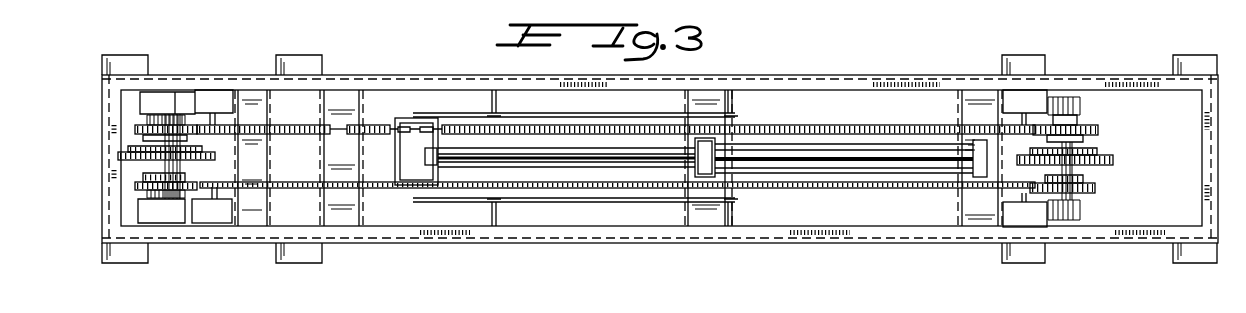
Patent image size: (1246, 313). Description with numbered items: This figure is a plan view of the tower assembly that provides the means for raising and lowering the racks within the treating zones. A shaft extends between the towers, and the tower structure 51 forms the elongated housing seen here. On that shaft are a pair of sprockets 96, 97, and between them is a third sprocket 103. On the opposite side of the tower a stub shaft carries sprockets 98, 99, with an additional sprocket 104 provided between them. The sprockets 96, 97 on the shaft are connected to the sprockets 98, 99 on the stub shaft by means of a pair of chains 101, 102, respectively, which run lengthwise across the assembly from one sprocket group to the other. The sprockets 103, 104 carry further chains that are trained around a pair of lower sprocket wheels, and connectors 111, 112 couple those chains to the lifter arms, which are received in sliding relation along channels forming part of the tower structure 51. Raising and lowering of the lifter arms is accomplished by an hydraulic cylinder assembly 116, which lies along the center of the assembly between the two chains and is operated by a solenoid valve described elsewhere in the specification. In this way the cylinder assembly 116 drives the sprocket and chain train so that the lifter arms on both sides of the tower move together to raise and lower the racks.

The tower 51 is at (510, 243).
The sprocket 96 is at (139, 181).
The sprocket 97 is at (135, 128).
The sprocket 98 is at (1097, 189).
The sprocket 99 is at (1097, 132).
The chain 101 is at (312, 160).
The chain 102 is at (340, 123).
The third sprocket 103 is at (117, 148).
The additional sprocket 104 is at (1113, 162).
The connector 111 is at (217, 216).
The connector 112 is at (1020, 217).
The hydraulic cylinder assembly 116 is at (827, 157).